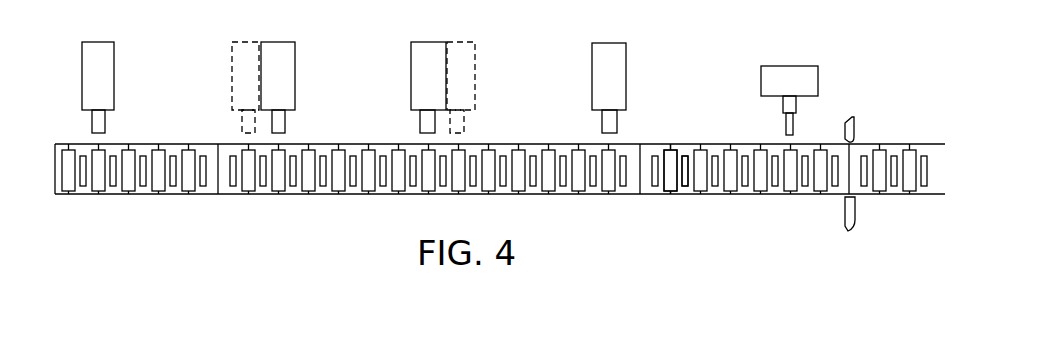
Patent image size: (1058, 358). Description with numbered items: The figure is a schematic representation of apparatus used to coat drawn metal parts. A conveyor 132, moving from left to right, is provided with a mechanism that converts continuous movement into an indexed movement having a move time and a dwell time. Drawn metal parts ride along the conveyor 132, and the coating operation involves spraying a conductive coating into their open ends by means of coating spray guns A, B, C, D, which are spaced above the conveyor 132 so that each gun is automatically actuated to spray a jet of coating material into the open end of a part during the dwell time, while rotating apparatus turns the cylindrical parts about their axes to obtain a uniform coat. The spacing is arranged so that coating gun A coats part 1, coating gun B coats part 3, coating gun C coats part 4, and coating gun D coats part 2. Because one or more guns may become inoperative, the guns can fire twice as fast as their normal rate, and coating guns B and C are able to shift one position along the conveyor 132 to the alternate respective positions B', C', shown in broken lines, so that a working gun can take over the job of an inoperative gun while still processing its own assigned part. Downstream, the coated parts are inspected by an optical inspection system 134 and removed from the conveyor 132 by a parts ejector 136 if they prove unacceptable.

The part 1 is at (487, 187).
The part 2 is at (96, 189).
The part 3 is at (428, 188).
The part 4 is at (278, 188).
The coating spray gun A is at (603, 50).
The coating spray gun B is at (420, 71).
The alternate position of coating gun B B' is at (469, 69).
The coating spray gun C is at (282, 71).
The alternate position of coating gun C C' is at (243, 71).
The coating spray gun D is at (94, 48).
The conveyor 132 is at (686, 197).
The optical inspection system 134 is at (777, 70).
The parts ejector 136 is at (855, 215).